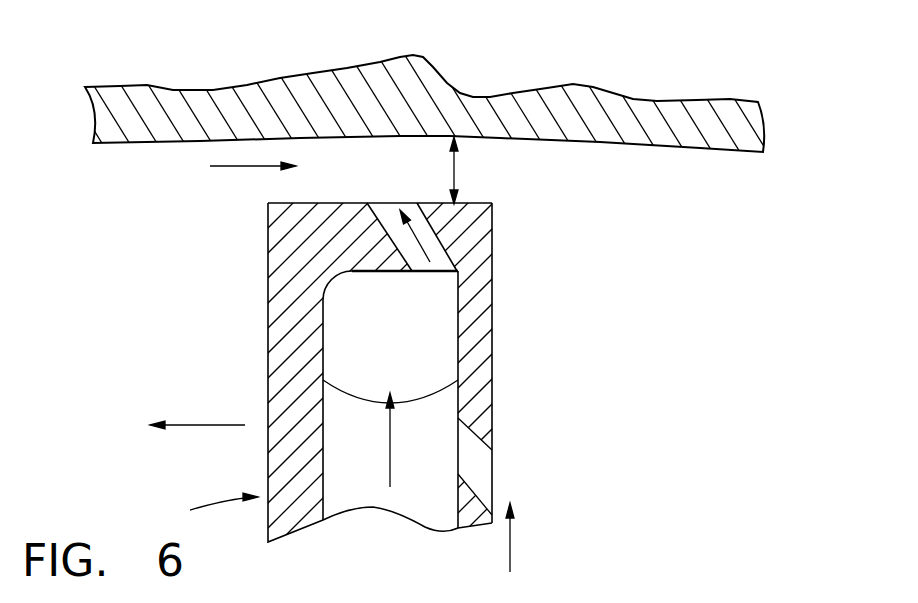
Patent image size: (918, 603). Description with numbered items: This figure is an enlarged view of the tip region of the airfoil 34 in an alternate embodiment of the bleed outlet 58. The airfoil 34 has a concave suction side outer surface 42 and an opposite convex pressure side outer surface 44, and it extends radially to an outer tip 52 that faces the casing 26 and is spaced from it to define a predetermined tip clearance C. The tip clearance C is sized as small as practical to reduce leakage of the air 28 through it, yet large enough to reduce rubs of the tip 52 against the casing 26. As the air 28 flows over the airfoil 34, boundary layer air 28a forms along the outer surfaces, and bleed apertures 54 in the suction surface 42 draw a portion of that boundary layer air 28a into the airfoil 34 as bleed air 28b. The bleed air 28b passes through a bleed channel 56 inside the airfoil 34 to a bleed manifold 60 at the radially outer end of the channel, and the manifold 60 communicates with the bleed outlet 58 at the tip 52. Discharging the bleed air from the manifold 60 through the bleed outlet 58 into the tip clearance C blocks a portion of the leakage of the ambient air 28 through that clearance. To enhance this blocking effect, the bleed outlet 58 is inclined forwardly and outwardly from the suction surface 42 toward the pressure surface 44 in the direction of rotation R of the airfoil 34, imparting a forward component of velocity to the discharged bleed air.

The casing 26 is at (138, 144).
The air 28 is at (237, 168).
The boundary layer air 28a is at (512, 556).
The bleed air 28b is at (392, 437).
The airfoil 34 is at (206, 510).
The suction side outer surface 42 is at (493, 321).
The pressure side outer surface 44 is at (268, 286).
The tip 52 is at (488, 202).
The bleed apertures 54 is at (484, 449).
The bleed channel 56 is at (374, 457).
The bleed outlet 58 is at (404, 260).
The bleed manifold 60 is at (377, 354).
The direction of rotation R is at (206, 424).
The tip clearance C is at (458, 170).